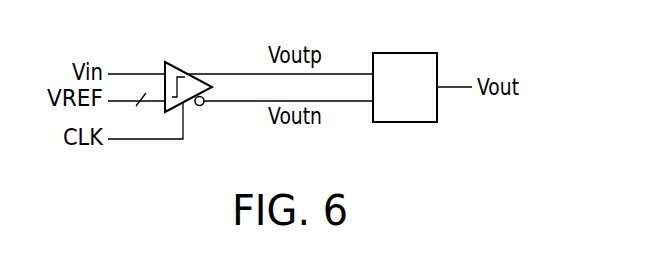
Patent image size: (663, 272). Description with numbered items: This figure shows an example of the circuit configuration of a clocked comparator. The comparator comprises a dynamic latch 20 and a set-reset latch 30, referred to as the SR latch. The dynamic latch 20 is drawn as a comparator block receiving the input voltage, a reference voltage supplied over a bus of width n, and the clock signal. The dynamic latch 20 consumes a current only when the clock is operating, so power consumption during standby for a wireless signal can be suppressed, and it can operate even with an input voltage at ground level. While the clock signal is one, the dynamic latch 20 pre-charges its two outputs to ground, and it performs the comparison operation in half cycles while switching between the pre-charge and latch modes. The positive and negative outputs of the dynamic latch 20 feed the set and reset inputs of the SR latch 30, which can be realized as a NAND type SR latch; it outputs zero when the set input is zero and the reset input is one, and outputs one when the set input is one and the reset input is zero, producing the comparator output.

The dynamic latch 20 is at (196, 61).
The set-reset latch 30 is at (450, 60).
The bus width indicator n is at (142, 110).